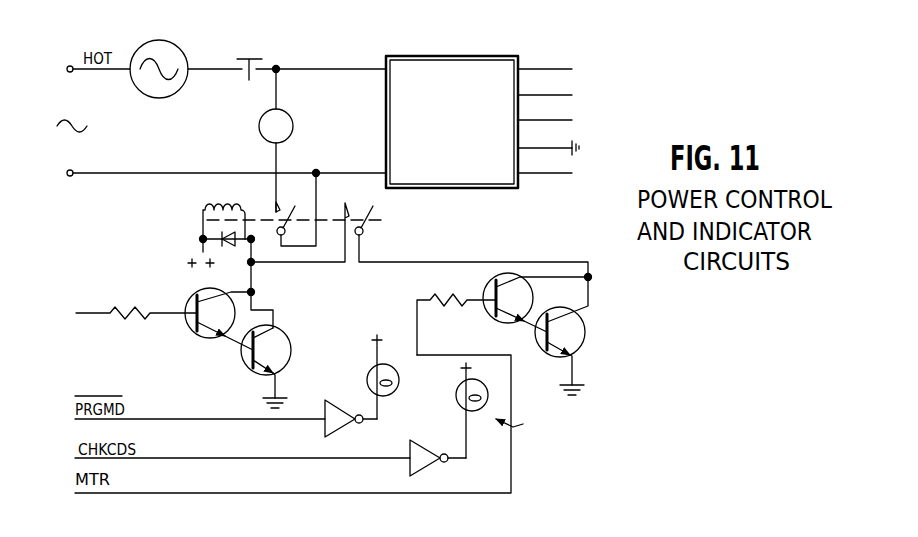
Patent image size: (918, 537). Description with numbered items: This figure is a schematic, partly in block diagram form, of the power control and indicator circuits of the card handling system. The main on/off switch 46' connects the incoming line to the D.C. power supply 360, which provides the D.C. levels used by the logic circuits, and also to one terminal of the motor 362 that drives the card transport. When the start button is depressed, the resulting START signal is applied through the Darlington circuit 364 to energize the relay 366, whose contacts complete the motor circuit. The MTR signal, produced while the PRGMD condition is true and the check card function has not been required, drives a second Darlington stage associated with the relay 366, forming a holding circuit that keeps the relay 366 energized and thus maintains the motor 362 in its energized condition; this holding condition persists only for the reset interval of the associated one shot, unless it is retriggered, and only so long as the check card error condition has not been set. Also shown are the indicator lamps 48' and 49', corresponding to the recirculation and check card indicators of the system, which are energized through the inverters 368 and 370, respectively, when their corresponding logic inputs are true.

The main on/off switch 46' is at (305, 58).
The D.C. power supply 360 is at (422, 54).
The motor 362 is at (292, 124).
The relay 366 is at (207, 203).
The Darlington circuit 364 is at (197, 291).
The inverter 368 is at (328, 398).
The inverter 370 is at (409, 441).
The indicator lamp 48' is at (399, 377).
The indicator lamp 49' is at (515, 410).